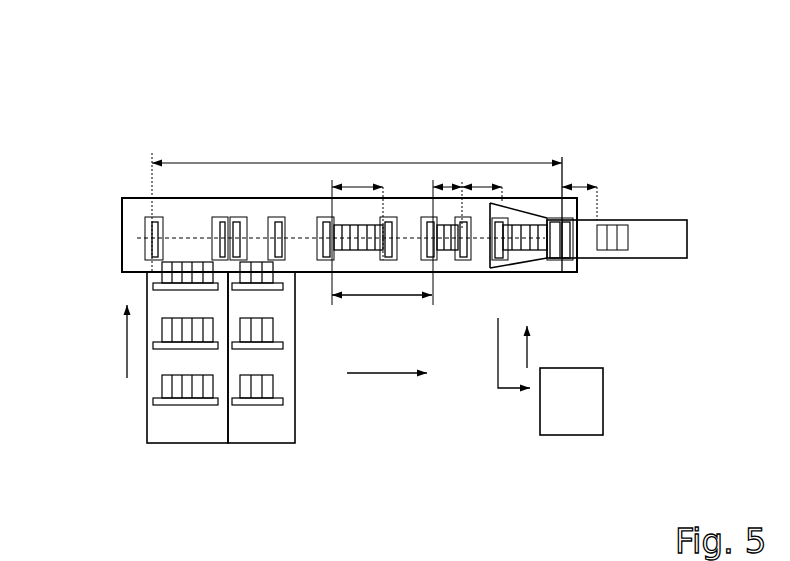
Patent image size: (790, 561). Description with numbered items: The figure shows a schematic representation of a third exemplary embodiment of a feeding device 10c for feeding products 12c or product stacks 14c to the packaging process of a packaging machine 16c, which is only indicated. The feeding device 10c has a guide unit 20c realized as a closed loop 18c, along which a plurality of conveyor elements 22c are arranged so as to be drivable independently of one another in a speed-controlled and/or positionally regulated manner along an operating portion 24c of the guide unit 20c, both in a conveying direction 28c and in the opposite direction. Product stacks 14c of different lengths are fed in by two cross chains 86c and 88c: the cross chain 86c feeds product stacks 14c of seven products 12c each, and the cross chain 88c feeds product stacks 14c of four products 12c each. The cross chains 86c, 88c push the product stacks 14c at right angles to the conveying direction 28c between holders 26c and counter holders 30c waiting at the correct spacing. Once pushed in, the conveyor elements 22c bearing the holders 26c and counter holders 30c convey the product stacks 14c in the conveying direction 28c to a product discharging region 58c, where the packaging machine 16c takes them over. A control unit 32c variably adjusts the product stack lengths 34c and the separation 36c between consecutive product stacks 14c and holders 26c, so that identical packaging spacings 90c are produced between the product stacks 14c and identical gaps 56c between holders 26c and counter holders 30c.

The feeding device 10c is at (648, 137).
The product 12c is at (153, 210).
The product stack 14c is at (188, 240).
The packaging machine 16c is at (571, 146).
The closed loop 18c is at (128, 215).
The guide unit 20c is at (120, 258).
The conveyor element 22c is at (238, 217).
The operating portion 24c is at (513, 162).
The holder 26c is at (283, 220).
The conveying direction 28c is at (385, 373).
The counter holder 30c is at (395, 228).
The control unit 32c is at (562, 417).
The product stack length 34c is at (348, 187).
The separation 36c is at (352, 298).
The gap 56c is at (482, 187).
The product discharging region 58c is at (484, 286).
The cross chain 86c is at (208, 418).
The cross chain 88c is at (278, 418).
The packaging spacing 90c is at (580, 183).